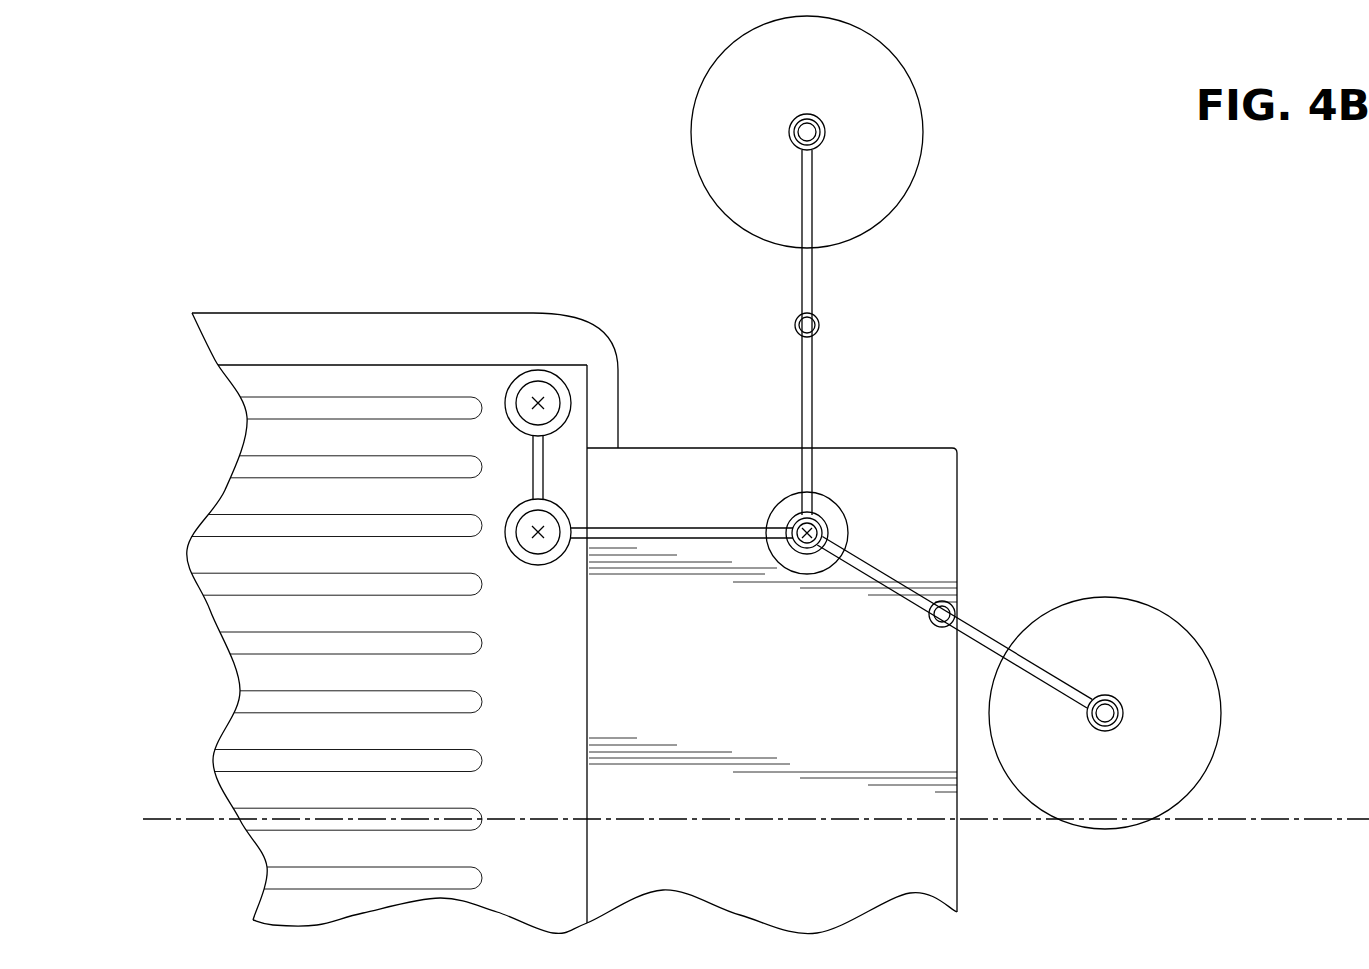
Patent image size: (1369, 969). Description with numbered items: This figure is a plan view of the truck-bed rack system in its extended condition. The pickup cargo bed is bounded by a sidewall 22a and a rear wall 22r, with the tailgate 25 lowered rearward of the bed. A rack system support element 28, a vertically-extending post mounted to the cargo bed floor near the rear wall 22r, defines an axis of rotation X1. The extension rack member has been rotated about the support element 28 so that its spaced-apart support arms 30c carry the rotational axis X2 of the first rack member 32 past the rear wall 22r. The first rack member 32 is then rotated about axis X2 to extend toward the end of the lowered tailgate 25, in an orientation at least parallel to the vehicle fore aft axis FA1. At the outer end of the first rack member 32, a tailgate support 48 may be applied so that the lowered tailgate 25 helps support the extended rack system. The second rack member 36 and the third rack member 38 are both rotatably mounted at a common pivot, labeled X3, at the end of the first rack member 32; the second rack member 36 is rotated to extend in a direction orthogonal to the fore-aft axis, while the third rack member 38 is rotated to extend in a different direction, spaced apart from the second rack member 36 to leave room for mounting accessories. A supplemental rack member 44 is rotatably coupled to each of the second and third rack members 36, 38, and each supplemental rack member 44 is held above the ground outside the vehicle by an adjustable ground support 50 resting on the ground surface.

The sidewall 22a is at (352, 345).
The rear wall 22r is at (605, 413).
The tailgate 25 is at (713, 448).
The rack system support element 28 is at (532, 378).
The support arm 30c is at (533, 468).
The first rack member 32 is at (683, 541).
The second rack member 36 is at (816, 388).
The third rack member 38 is at (889, 566).
The supplemental rack member 44 is at (813, 224).
The tailgate support 48 is at (851, 518).
The ground support 50 is at (908, 67).
The axis of rotation X1 is at (532, 402).
The rotational axis X2 is at (538, 548).
The pivot axis X3 is at (808, 540).
The fore aft axis FA1 is at (185, 818).